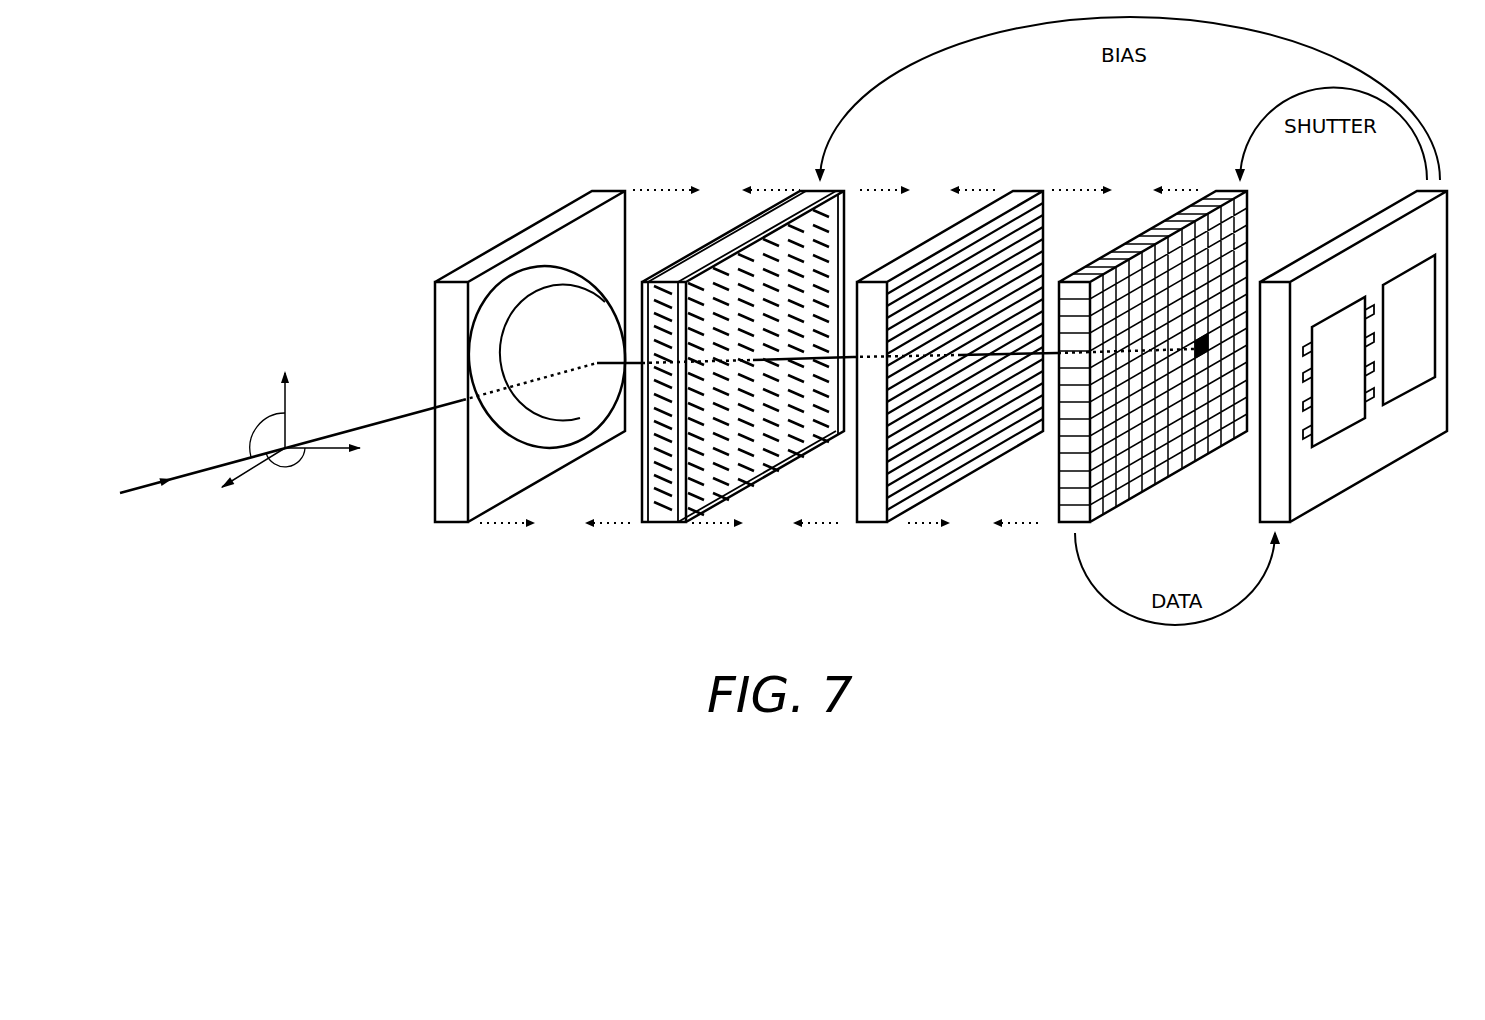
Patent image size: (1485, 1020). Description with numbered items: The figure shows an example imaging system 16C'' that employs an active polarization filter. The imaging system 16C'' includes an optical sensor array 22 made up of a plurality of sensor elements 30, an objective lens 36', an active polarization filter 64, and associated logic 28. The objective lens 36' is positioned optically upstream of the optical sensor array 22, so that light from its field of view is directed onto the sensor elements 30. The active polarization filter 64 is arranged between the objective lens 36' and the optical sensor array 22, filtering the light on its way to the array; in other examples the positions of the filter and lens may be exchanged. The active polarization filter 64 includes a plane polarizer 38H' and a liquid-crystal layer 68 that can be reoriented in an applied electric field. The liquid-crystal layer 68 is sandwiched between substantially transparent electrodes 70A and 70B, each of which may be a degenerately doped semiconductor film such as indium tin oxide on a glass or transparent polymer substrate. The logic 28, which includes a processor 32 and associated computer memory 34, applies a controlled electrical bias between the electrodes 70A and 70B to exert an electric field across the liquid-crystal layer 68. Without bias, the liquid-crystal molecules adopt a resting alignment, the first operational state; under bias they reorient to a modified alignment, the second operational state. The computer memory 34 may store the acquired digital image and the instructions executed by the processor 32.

The imaging system 16C'' is at (657, 309).
The objective lens 36' is at (534, 356).
The active polarization filter 64 is at (1043, 545).
The liquid-crystal layer 68 is at (733, 247).
The electrode 70A is at (642, 492).
The electrode 70B is at (850, 216).
The plane polarizer 38H' is at (950, 326).
The optical sensor array 22 is at (1180, 500).
The sensor elements 30 is at (1201, 337).
The logic 28 is at (1353, 356).
The processor 32 is at (1338, 372).
The computer memory 34 is at (1409, 330).